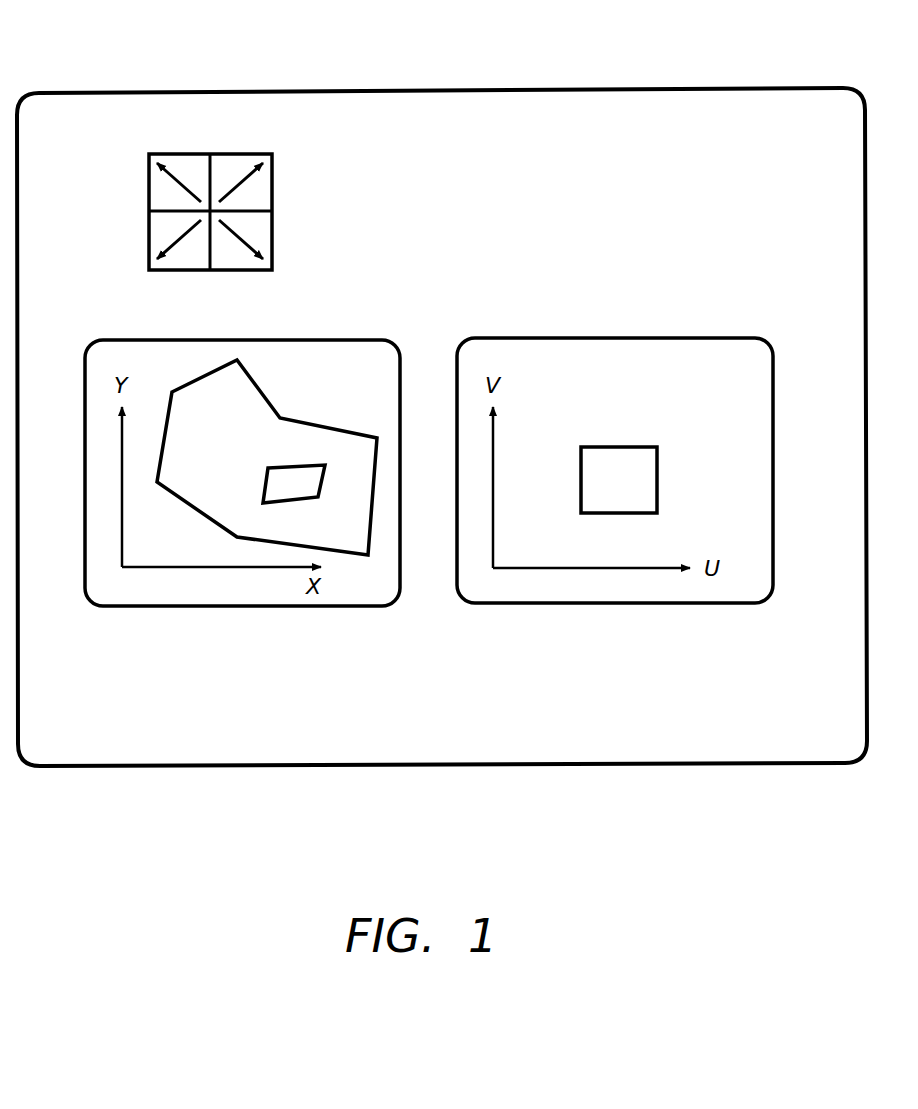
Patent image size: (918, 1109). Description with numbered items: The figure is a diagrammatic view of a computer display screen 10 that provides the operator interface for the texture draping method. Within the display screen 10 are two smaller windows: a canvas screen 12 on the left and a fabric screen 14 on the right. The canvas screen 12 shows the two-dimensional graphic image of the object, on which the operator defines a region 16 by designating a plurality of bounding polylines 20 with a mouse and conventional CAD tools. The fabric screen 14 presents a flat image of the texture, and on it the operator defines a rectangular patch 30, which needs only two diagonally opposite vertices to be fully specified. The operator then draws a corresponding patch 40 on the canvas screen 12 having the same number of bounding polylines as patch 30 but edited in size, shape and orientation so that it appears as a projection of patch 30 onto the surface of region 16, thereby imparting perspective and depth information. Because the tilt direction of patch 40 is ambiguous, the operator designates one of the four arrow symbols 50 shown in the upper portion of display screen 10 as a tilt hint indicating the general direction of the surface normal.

The computer display screen 10 is at (488, 90).
The canvas screen 12 is at (327, 339).
The fabric screen 14 is at (590, 337).
The region 16 is at (255, 418).
The bounding polylines 20 is at (162, 415).
The patch 30 is at (625, 446).
The corresponding patch 40 is at (268, 474).
The arrow symbols 50 is at (149, 165).